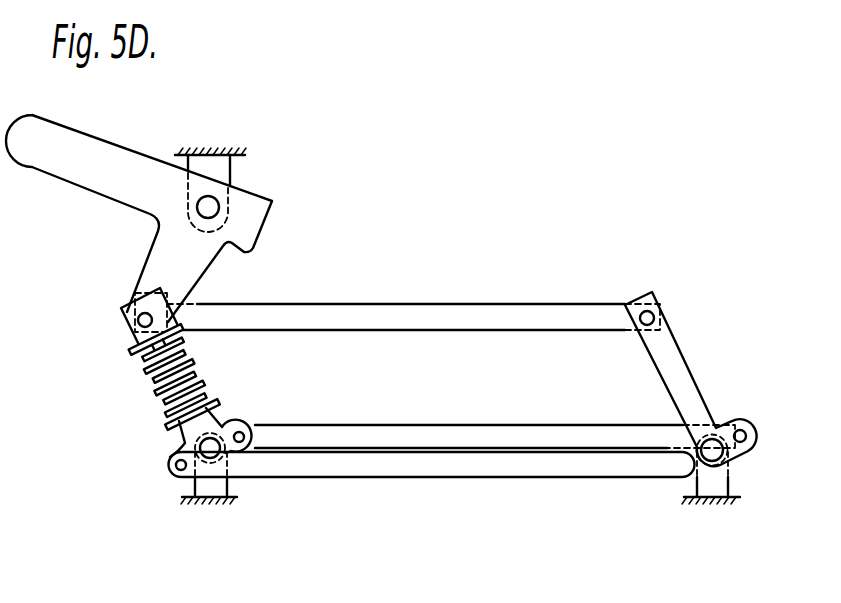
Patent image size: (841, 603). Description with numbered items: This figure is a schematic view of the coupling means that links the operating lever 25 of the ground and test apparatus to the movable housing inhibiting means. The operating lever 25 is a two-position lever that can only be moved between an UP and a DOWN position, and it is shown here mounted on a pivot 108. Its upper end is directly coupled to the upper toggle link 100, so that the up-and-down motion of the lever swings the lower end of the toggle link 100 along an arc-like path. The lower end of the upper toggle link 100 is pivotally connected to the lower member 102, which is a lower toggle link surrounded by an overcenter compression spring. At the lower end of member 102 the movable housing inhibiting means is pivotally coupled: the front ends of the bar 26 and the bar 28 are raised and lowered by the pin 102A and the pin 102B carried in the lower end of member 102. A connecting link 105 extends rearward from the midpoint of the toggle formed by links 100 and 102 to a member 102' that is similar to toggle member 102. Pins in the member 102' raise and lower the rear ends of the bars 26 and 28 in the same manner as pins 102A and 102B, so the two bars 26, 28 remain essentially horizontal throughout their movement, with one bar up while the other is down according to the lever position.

The operating lever 25 is at (92, 148).
The pivot pin 108 is at (218, 206).
The upper toggle link 100 is at (160, 258).
The connecting link 105 is at (347, 313).
The lower member 102 is at (170, 393).
The member 102' is at (696, 398).
The pin 102A is at (180, 467).
The pin 102B is at (240, 435).
The bar 26 is at (378, 438).
The bar 28 is at (332, 463).